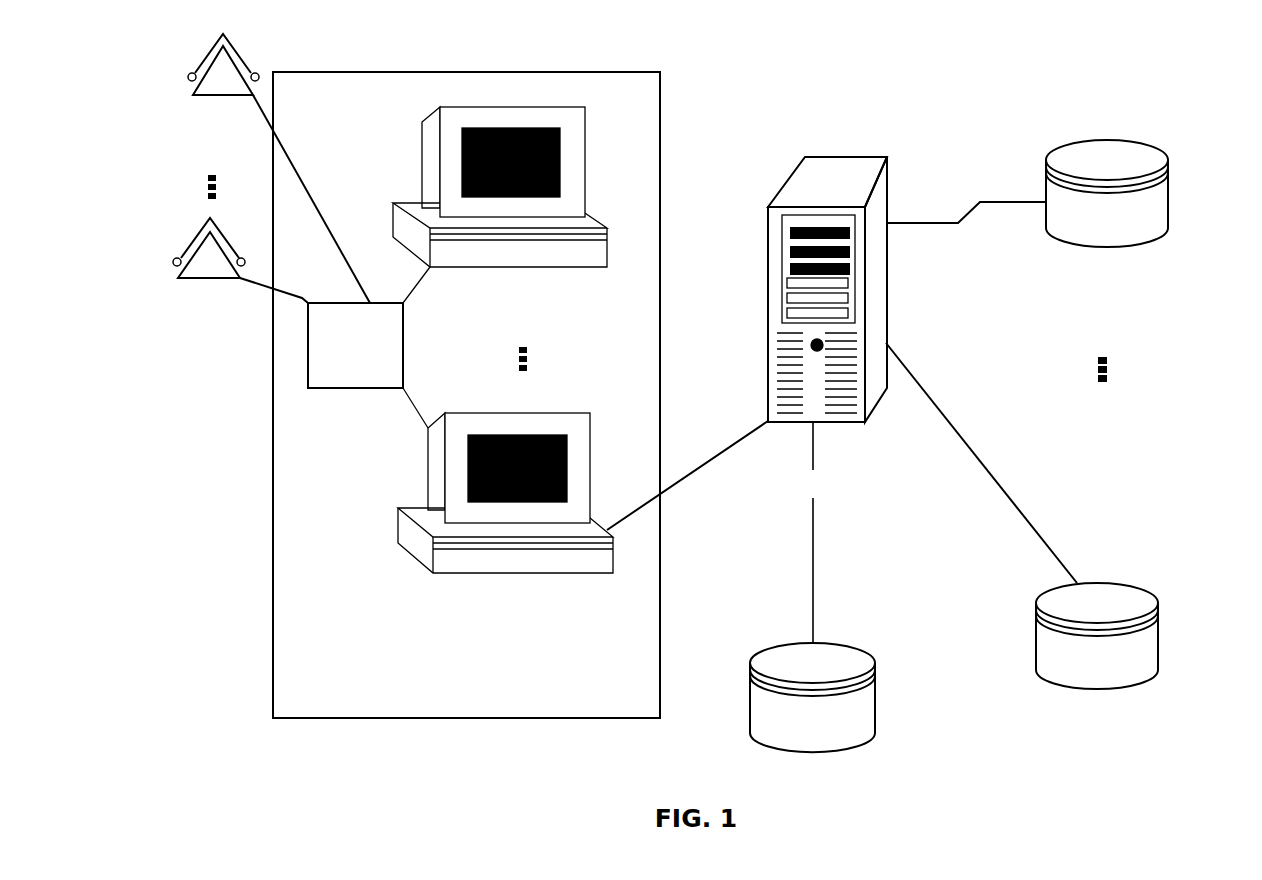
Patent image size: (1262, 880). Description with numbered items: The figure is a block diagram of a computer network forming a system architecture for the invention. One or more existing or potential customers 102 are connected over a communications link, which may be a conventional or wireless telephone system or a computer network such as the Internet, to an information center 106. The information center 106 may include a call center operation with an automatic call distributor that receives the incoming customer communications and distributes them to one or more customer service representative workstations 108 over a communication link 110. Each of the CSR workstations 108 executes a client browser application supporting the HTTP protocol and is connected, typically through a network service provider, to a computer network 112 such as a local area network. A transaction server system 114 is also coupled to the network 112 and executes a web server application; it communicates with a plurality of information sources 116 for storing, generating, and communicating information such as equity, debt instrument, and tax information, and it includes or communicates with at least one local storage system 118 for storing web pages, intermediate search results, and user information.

The existing or potential customers 102 is at (217, 97).
The information center 106 is at (310, 598).
The customer service representative (CSR) workstations 108 is at (585, 218).
The communication link 110 is at (410, 413).
The computer network 112 is at (690, 473).
The transaction server system 114 is at (802, 190).
The information sources 116 is at (1168, 198).
The local storage system 118 is at (876, 695).